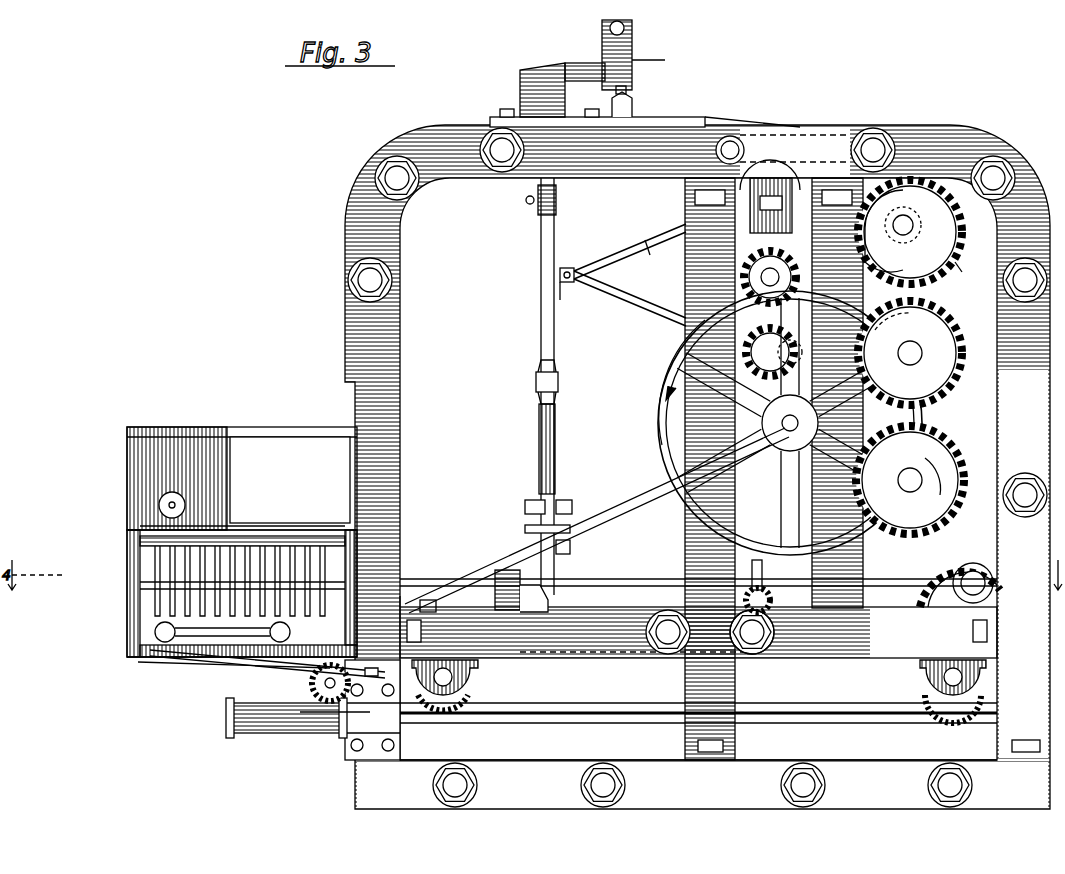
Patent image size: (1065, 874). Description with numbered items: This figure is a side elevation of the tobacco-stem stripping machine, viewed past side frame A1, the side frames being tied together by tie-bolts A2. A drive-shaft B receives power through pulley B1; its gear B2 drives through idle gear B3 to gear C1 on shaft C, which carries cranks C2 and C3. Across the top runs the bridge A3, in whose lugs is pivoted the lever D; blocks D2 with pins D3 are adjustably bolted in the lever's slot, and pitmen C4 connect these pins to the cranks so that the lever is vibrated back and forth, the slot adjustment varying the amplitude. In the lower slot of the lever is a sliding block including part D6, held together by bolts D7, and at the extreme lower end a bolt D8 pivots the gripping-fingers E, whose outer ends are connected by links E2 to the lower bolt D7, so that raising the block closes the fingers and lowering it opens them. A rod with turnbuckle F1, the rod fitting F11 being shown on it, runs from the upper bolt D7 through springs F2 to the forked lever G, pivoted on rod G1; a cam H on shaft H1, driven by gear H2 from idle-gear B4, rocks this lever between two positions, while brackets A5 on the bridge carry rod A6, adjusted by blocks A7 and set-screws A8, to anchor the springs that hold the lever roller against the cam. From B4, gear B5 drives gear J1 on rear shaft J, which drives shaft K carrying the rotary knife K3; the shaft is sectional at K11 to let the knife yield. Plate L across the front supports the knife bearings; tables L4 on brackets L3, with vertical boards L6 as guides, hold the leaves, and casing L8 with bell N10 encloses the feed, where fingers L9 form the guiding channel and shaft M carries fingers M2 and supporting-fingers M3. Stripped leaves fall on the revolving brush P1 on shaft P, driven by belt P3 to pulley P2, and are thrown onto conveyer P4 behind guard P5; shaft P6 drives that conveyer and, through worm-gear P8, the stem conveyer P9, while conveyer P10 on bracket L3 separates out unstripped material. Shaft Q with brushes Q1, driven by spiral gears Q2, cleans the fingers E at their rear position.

The side frame A1 is at (408, 358).
The tie-bolts A2 is at (360, 280).
The bridge A3 is at (522, 86).
The brackets A5 is at (634, 70).
The rod A6 is at (626, 28).
The blocks A7 is at (660, 50).
The set-screws A8 is at (634, 100).
The forked lever G is at (730, 138).
The rod G1 is at (745, 135).
The lever D is at (540, 335).
The blocks D2 is at (569, 268).
The pins D3 is at (570, 296).
The sliding block part D6 is at (572, 510).
The bolts D7 is at (525, 507).
The bolt D8 is at (570, 547).
The turnbuckle F1 is at (558, 445).
The springs F2 is at (558, 202).
The coupling F11 is at (560, 383).
The shaft C is at (758, 282).
The gear C1 is at (793, 225).
The crank C2 is at (686, 333).
The crank C3 is at (685, 213).
The pitmen C4 is at (648, 250).
The drive-shaft B is at (782, 428).
The pulley B1 is at (663, 436).
The gear B2 is at (772, 380).
The idle gear B3 is at (745, 348).
The idle-gear B4 is at (910, 353).
The gear B5 is at (910, 480).
The cam H is at (948, 270).
The shaft H1 is at (893, 231).
The gear H2 is at (977, 254).
The shaft J is at (988, 583).
The gear J1 is at (960, 574).
The shaft Q is at (775, 615).
The brushes Q1 is at (745, 601).
The spiral gears Q2 is at (756, 561).
The shaft K is at (648, 586).
The rotary knife K3 is at (380, 591).
The sectional shaft portion K11 is at (452, 590).
The gripping-fingers E is at (550, 602).
The links E2 is at (528, 533).
The shaft P is at (328, 700).
The revolving brush P1 is at (320, 690).
The pulley P2 is at (312, 686).
The belt P3 is at (612, 505).
The conveyer P4 is at (248, 738).
The guard P5 is at (222, 678).
The shaft P6 is at (596, 725).
The worm-gear P8 is at (446, 735).
The conveyer P9 is at (598, 712).
The conveyer P10 is at (185, 668).
The plate L is at (246, 593).
The brackets L3 is at (160, 658).
The tables L4 is at (140, 527).
The vertical boards L6 is at (350, 475).
The casing L8 is at (282, 445).
The fingers L9 is at (140, 540).
The shaft M is at (160, 590).
The fingers M2 is at (160, 612).
The supporting-fingers M3 is at (160, 560).
The bell N10 is at (185, 505).